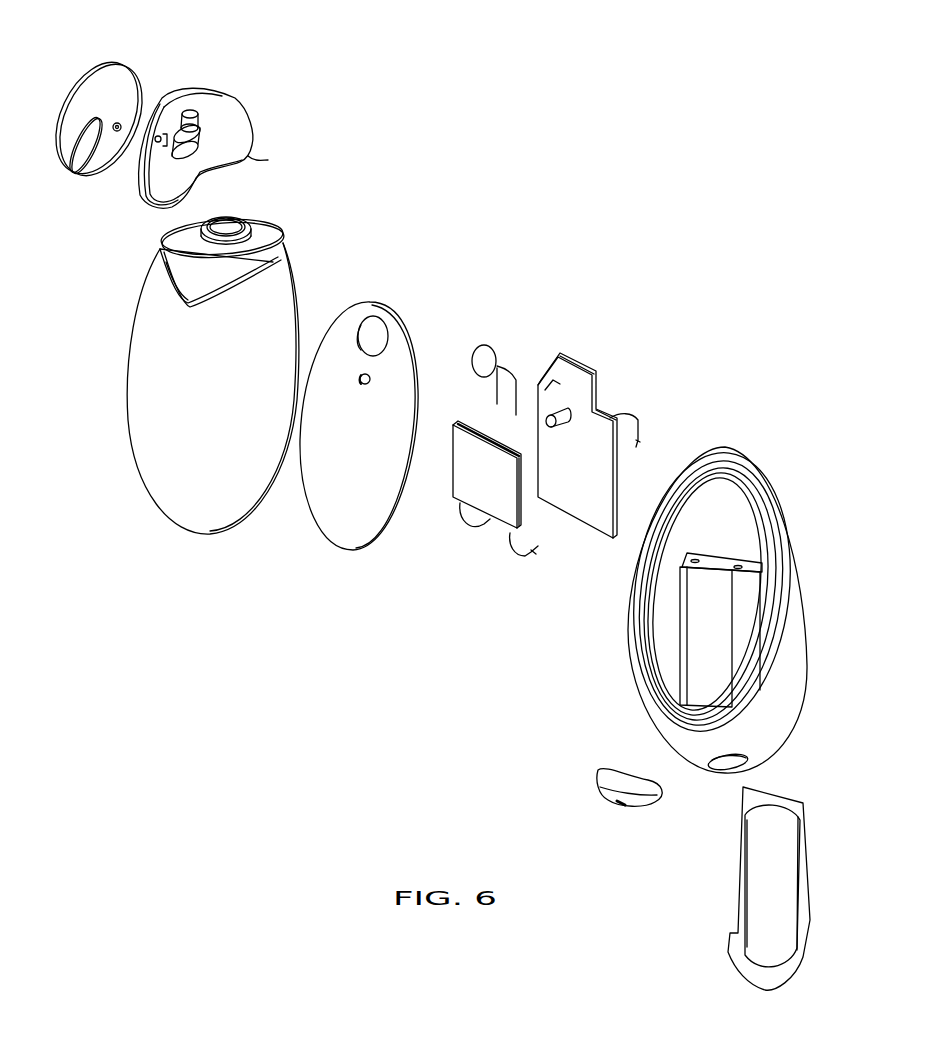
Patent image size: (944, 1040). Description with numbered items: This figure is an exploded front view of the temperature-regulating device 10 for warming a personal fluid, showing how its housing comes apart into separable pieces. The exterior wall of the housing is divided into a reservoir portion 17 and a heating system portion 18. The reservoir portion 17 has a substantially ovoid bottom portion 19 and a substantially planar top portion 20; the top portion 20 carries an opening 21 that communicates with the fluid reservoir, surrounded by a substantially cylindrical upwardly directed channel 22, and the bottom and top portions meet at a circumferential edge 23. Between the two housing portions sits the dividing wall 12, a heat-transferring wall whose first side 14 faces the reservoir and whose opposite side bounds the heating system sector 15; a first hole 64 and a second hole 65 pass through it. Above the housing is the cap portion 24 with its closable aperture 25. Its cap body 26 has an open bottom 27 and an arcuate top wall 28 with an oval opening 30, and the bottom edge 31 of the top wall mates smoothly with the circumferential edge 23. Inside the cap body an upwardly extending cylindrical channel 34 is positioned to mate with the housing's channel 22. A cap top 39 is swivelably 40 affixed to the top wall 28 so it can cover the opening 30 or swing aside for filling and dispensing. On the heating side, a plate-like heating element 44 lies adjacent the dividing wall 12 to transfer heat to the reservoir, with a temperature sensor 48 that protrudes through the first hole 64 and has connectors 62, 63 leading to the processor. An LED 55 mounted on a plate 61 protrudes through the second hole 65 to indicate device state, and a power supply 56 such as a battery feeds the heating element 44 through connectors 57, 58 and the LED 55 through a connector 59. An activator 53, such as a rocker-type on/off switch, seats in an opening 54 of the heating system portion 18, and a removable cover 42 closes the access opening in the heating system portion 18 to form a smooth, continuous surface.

The temperature-regulating device 10 is at (636, 207).
The dividing wall 12 is at (346, 413).
The first side 14 is at (333, 516).
The heating system sector 15 is at (722, 522).
The reservoir portion 17 is at (170, 487).
The heating system portion 18 is at (733, 624).
The bottom portion 19 is at (227, 353).
The top portion 20 is at (268, 241).
The opening 21 is at (232, 234).
The channel 22 is at (215, 232).
The circumferential edge 23 is at (282, 250).
The cap portion 24 is at (209, 124).
The closable aperture 25 is at (192, 110).
The cap body 26 is at (196, 148).
The open bottom 27 is at (272, 154).
The arcuate top wall 28 is at (222, 108).
The opening 30 is at (172, 116).
The bottom edge 31 is at (158, 208).
The cylindrical channel 34 is at (202, 108).
The cap top 39 is at (98, 118).
The swivel 40 is at (121, 126).
The cover 42 is at (806, 890).
The heating element 44 is at (479, 508).
The temperature sensor 48 is at (499, 353).
The activator 53 is at (597, 770).
The opening 54 is at (709, 764).
The LED 55 is at (552, 426).
The power supply 56 is at (745, 622).
The connector 57 is at (527, 557).
The connector 58 is at (471, 530).
The connector 59 is at (636, 412).
The plate 61 is at (606, 427).
The connector 62 is at (495, 388).
The connector 63 is at (506, 371).
The first hole 64 is at (377, 334).
The second hole 65 is at (362, 376).